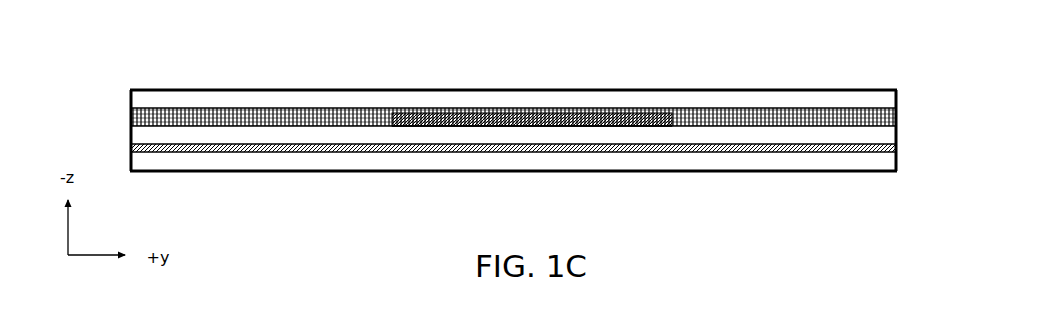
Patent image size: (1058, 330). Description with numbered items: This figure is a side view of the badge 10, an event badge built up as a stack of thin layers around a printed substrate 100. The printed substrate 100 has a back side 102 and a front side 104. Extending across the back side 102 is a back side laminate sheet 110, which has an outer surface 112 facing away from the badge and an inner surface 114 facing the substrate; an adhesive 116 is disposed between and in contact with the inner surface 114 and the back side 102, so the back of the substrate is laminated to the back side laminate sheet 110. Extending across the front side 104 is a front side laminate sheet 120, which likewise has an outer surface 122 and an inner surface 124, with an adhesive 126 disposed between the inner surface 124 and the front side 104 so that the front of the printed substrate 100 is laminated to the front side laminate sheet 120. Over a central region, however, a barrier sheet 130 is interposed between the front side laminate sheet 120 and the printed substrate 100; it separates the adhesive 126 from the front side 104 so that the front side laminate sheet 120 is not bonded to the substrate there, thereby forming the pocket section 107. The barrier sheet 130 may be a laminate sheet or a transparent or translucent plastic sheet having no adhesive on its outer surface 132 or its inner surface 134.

The badge 10 is at (537, 55).
The printed substrate 100 is at (499, 112).
The back side 102 is at (177, 144).
The front side 104 is at (526, 119).
The pocket section 107 is at (615, 130).
The back side laminate sheet 110 is at (542, 188).
The outer surface 112 is at (300, 172).
The inner surface 114 is at (544, 175).
The adhesive 116 is at (895, 148).
The front side laminate sheet 120 is at (537, 67).
The outer surface 122 is at (320, 89).
The inner surface 124 is at (223, 110).
The adhesive 126 is at (895, 120).
The barrier sheet 130 is at (526, 78).
The outer surface 132 is at (622, 118).
The inner surface 134 is at (670, 120).